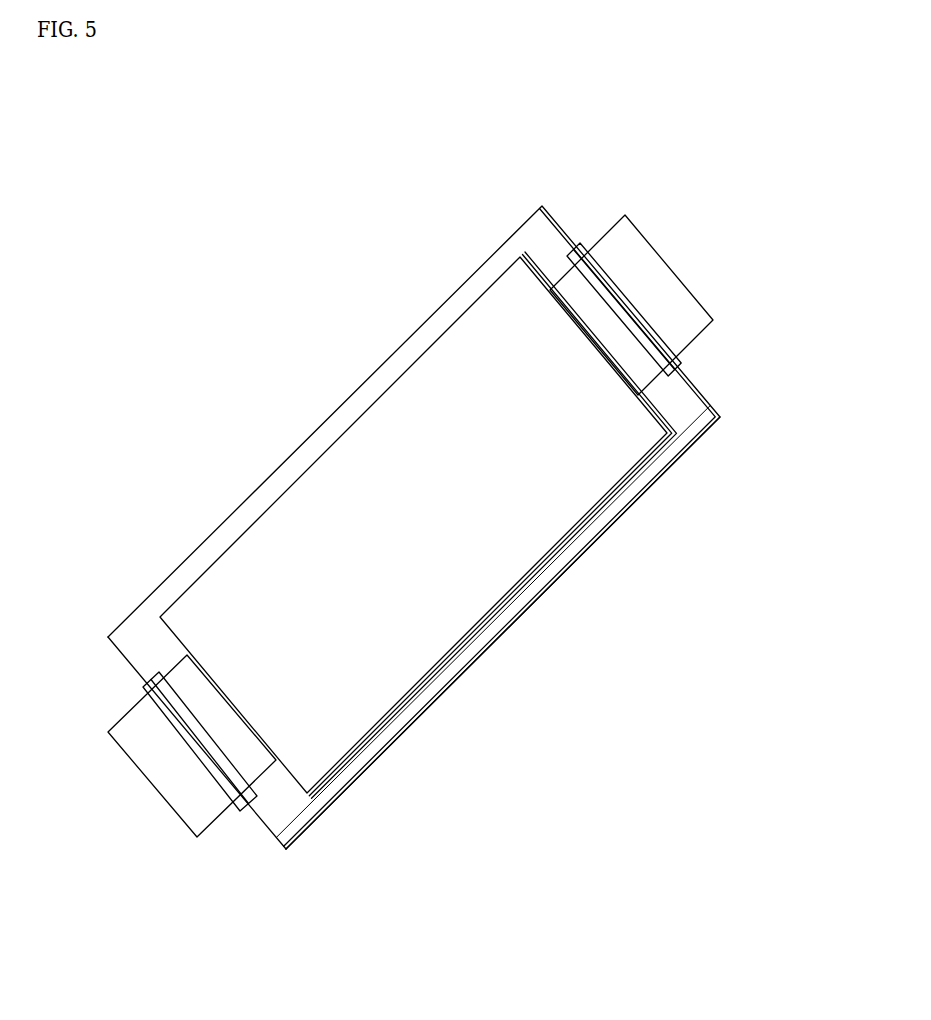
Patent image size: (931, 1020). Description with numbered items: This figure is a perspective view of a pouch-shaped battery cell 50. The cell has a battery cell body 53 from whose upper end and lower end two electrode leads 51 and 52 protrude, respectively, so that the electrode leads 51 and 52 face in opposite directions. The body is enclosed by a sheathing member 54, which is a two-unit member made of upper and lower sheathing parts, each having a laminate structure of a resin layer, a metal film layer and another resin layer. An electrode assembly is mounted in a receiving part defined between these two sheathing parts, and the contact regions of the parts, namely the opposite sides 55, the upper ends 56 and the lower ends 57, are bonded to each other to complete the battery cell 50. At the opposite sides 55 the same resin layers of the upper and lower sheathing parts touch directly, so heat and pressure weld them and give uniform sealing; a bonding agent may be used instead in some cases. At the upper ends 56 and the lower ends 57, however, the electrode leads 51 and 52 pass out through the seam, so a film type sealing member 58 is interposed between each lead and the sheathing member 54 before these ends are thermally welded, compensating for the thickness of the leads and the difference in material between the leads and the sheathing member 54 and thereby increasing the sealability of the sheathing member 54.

The pouch-shaped battery cell 50 is at (96, 210).
The electrode lead 51 is at (173, 785).
The electrode lead 52 is at (675, 270).
The battery cell body 53 is at (352, 455).
The sheathing member 54 is at (525, 222).
The opposite sides 55 is at (527, 598).
The upper ends 56 is at (142, 628).
The lower ends 57 is at (698, 415).
The film type sealing member 58 is at (585, 245).